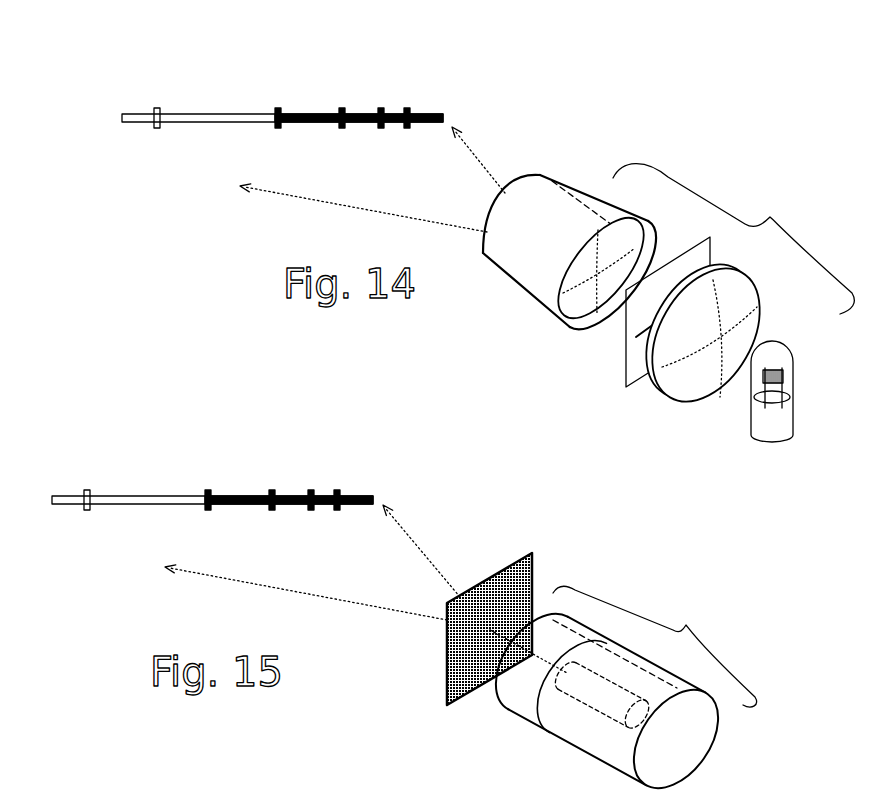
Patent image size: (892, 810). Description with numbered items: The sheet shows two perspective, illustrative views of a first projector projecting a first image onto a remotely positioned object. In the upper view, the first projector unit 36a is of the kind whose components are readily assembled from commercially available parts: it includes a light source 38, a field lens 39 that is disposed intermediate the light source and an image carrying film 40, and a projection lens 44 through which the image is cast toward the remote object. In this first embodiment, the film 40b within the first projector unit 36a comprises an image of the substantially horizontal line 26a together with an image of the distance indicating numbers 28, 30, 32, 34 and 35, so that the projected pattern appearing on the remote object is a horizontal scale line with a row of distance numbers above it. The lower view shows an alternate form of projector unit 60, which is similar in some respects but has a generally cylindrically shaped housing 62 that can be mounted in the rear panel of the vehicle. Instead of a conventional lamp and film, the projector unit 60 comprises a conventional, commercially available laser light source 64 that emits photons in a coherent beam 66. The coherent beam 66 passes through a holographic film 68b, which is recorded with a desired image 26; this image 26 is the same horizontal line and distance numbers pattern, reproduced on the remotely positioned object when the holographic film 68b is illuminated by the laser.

In FIG. 15, the image 26 is at (230, 456).
In FIG. 14, the substantially horizontal line 26a is at (197, 113).
In FIG. 15, the substantially horizontal line 26a is at (118, 503).
In FIG. 14, the distance indicating number 28 is at (155, 60).
In FIG. 15, the distance indicating number 28 is at (85, 440).
In FIG. 14, the distance indicating number 30 is at (277, 60).
In FIG. 15, the distance indicating number 30 is at (207, 440).
In FIG. 14, the distance indicating number 32 is at (342, 60).
In FIG. 15, the distance indicating number 32 is at (273, 440).
In FIG. 14, the distance indicating number 34 is at (382, 62).
In FIG. 15, the distance indicating number 34 is at (313, 440).
In FIG. 14, the distance indicating number 35 is at (422, 77).
In FIG. 15, the distance indicating number 35 is at (350, 457).
In FIG. 14, the first projector unit 36a is at (733, 239).
In FIG. 14, the light source 38 is at (755, 425).
In FIG. 14, the field lens 39 is at (680, 395).
In FIG. 14, the image carrying film 40 is at (622, 295).
In FIG. 14, the film 40b is at (695, 255).
In FIG. 14, the projection lens 44 is at (558, 187).
In FIG. 15, the projector unit 60 is at (589, 694).
In FIG. 15, the generally cylindrically shaped housing 62 is at (585, 740).
In FIG. 15, the light source 64 is at (587, 703).
In FIG. 15, the coherent beam 66 is at (506, 698).
In FIG. 15, the holographic film 68b is at (446, 660).